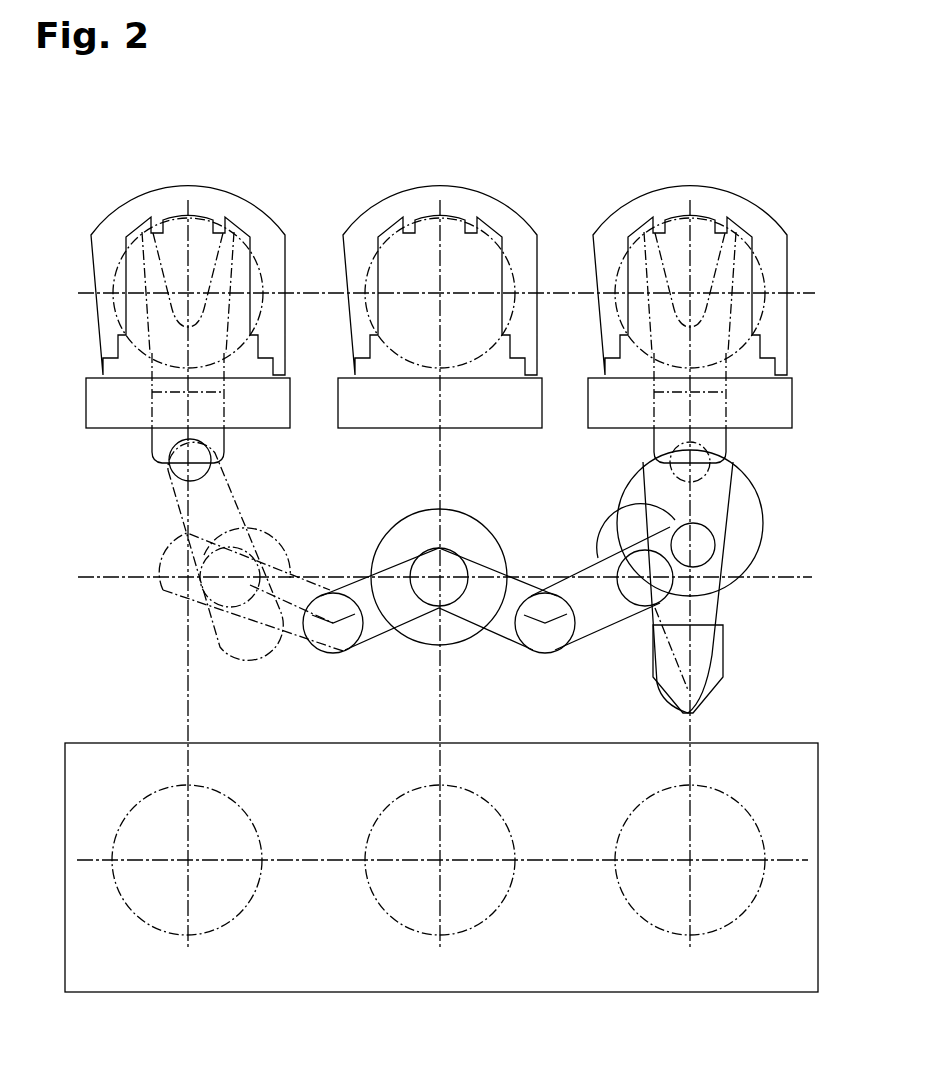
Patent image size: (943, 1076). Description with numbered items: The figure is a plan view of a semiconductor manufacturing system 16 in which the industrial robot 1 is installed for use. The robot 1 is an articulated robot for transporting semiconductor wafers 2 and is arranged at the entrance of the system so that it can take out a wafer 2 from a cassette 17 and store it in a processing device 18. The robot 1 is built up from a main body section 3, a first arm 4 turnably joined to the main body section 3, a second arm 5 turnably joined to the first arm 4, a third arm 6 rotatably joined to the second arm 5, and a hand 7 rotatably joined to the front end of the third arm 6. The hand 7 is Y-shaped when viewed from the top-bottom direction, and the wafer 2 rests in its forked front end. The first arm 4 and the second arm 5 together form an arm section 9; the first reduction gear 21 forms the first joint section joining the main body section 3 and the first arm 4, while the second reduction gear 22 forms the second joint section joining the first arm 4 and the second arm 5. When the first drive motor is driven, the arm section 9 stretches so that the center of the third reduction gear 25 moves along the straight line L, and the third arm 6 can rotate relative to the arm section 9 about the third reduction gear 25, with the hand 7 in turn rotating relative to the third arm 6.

The industrial robot 1 is at (540, 502).
The semiconductor wafer 2 is at (805, 267).
The main body section 3 is at (408, 512).
The first arm 4 is at (378, 637).
The second arm 5 is at (377, 707).
The third arm 6 is at (237, 487).
The hand 7 is at (223, 440).
The arm section 9 is at (439, 644).
The semiconductor manufacturing system 16 is at (762, 132).
The cassette 17 is at (150, 197).
The processing device 18 is at (328, 993).
The first reduction gear 21 is at (452, 550).
The second reduction gear 22 is at (333, 593).
The third reduction gear 25 is at (262, 533).
The straight line L is at (92, 578).